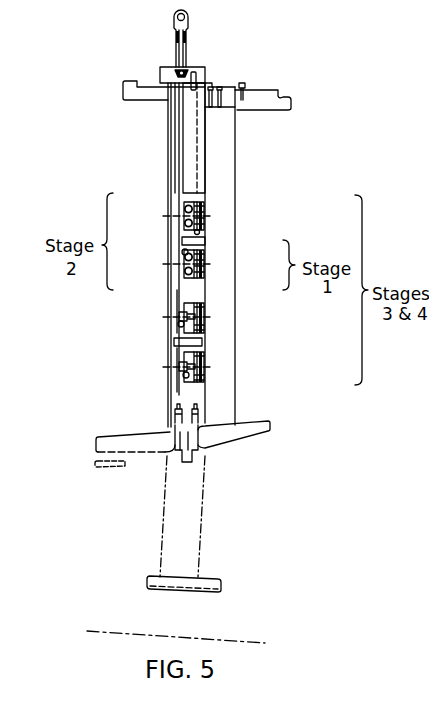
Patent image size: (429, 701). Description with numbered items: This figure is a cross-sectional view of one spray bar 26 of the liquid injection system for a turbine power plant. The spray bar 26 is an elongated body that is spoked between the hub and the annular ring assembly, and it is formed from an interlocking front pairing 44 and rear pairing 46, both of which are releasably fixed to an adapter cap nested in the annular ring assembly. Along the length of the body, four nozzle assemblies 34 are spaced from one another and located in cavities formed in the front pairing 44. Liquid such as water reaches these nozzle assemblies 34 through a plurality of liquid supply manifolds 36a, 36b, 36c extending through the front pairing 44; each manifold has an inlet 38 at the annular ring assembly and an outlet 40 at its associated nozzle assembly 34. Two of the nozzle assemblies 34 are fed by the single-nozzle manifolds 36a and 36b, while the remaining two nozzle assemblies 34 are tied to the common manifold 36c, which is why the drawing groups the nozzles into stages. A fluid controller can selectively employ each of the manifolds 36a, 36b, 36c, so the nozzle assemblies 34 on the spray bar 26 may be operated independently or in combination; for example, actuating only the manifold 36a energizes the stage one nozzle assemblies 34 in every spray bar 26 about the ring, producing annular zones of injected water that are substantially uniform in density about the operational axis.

The spray bar 26 is at (139, 136).
The nozzle assembly 34 is at (215, 219).
The single-nozzle manifold 36a is at (187, 142).
The single-nozzle manifold 36b is at (200, 240).
The common manifold 36c is at (173, 344).
The inlet 38 is at (183, 71).
The outlet 40 is at (196, 233).
The front pairing 44 is at (167, 399).
The rear pairing 46 is at (236, 396).